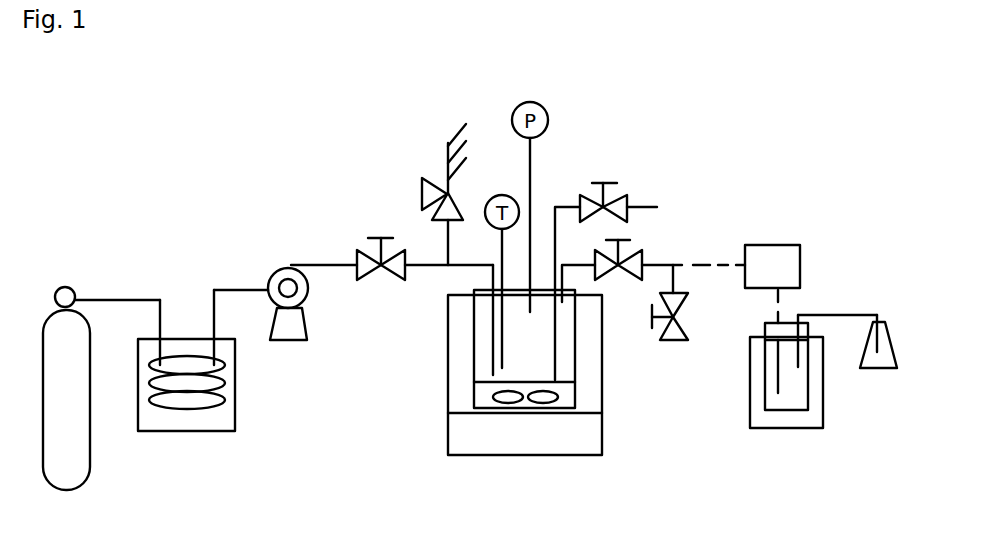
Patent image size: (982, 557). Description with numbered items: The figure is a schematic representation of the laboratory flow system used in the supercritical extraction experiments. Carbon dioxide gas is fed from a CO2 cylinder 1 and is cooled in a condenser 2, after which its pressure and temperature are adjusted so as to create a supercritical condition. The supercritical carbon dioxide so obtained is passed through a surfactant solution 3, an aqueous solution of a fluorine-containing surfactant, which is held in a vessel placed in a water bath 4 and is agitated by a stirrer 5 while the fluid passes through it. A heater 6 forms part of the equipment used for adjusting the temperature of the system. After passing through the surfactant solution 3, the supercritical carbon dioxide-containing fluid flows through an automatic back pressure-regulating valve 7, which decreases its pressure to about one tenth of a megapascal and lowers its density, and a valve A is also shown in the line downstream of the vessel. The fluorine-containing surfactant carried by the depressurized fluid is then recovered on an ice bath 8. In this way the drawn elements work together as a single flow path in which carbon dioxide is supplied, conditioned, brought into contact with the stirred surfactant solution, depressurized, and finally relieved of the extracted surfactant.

The CO2 cylinder 1 is at (90, 455).
The condenser 2 is at (235, 390).
The surfactant solution 3 is at (483, 390).
The water bath 4 is at (585, 397).
The stirrer 5 is at (580, 435).
The heater 6 is at (700, 262).
The automatic back pressure-regulating valve 7 is at (800, 257).
The ice bath 8 is at (810, 420).
The valve A is at (681, 302).